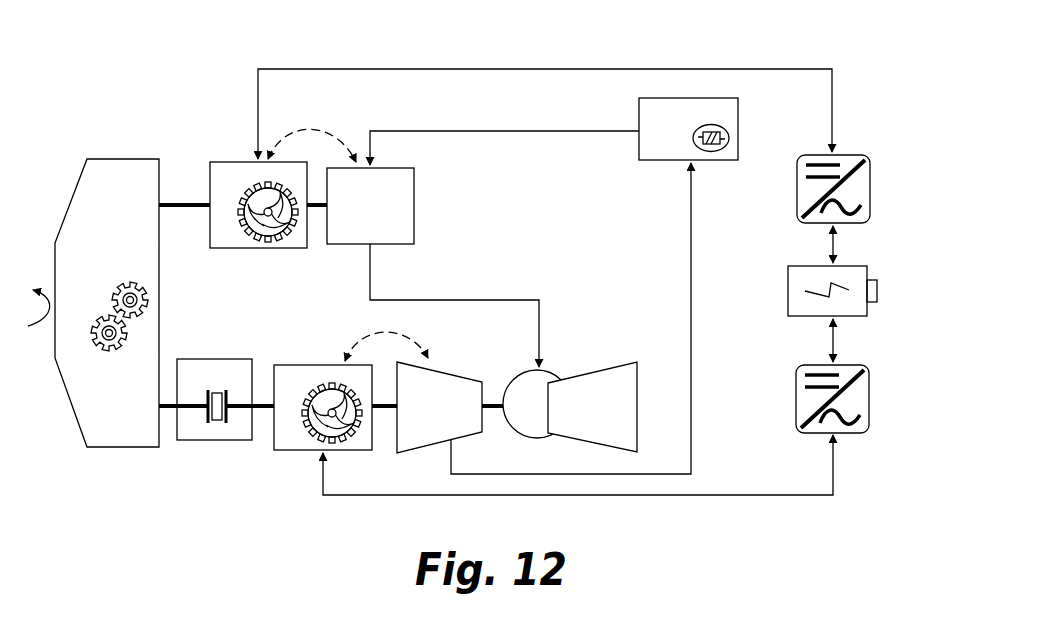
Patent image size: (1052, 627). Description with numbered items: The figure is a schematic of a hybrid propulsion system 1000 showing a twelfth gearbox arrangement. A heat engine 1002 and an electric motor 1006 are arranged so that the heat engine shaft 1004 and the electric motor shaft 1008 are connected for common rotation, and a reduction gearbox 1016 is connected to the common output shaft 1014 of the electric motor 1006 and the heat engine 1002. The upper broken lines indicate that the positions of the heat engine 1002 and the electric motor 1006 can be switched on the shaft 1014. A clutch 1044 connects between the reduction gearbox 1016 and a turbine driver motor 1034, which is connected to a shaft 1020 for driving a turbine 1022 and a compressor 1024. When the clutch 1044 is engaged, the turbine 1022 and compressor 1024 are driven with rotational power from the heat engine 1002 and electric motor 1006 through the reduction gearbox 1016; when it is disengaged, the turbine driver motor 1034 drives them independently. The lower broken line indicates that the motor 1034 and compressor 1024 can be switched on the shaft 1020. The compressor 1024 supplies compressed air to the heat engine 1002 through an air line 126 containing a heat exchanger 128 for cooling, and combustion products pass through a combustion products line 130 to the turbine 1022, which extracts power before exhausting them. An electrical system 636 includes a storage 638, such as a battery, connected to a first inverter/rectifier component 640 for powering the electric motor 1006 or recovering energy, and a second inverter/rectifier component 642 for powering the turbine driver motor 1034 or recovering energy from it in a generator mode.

The system 1000 is at (143, 45).
The reduction gearbox 1016 is at (74, 190).
The electric motor shaft 1008 is at (181, 203).
The common output shaft 1014 is at (202, 157).
The electric motor 1006 is at (235, 248).
The heat engine shaft 1004 is at (317, 210).
The heat engine 1002 is at (414, 224).
The combustion products line 130 is at (370, 278).
The heat exchanger 128 is at (714, 160).
The air line 126 is at (691, 310).
The electrical system 636 is at (828, 59).
The first inverter/rectifier component 640 is at (870, 170).
The storage 638 is at (867, 272).
The second inverter/rectifier component 642 is at (869, 385).
The clutch 1044 is at (222, 440).
The turbine driver motor 1034 is at (310, 450).
The shaft 1020 is at (385, 410).
The compressor 1024 is at (450, 372).
The turbine 1022 is at (600, 363).